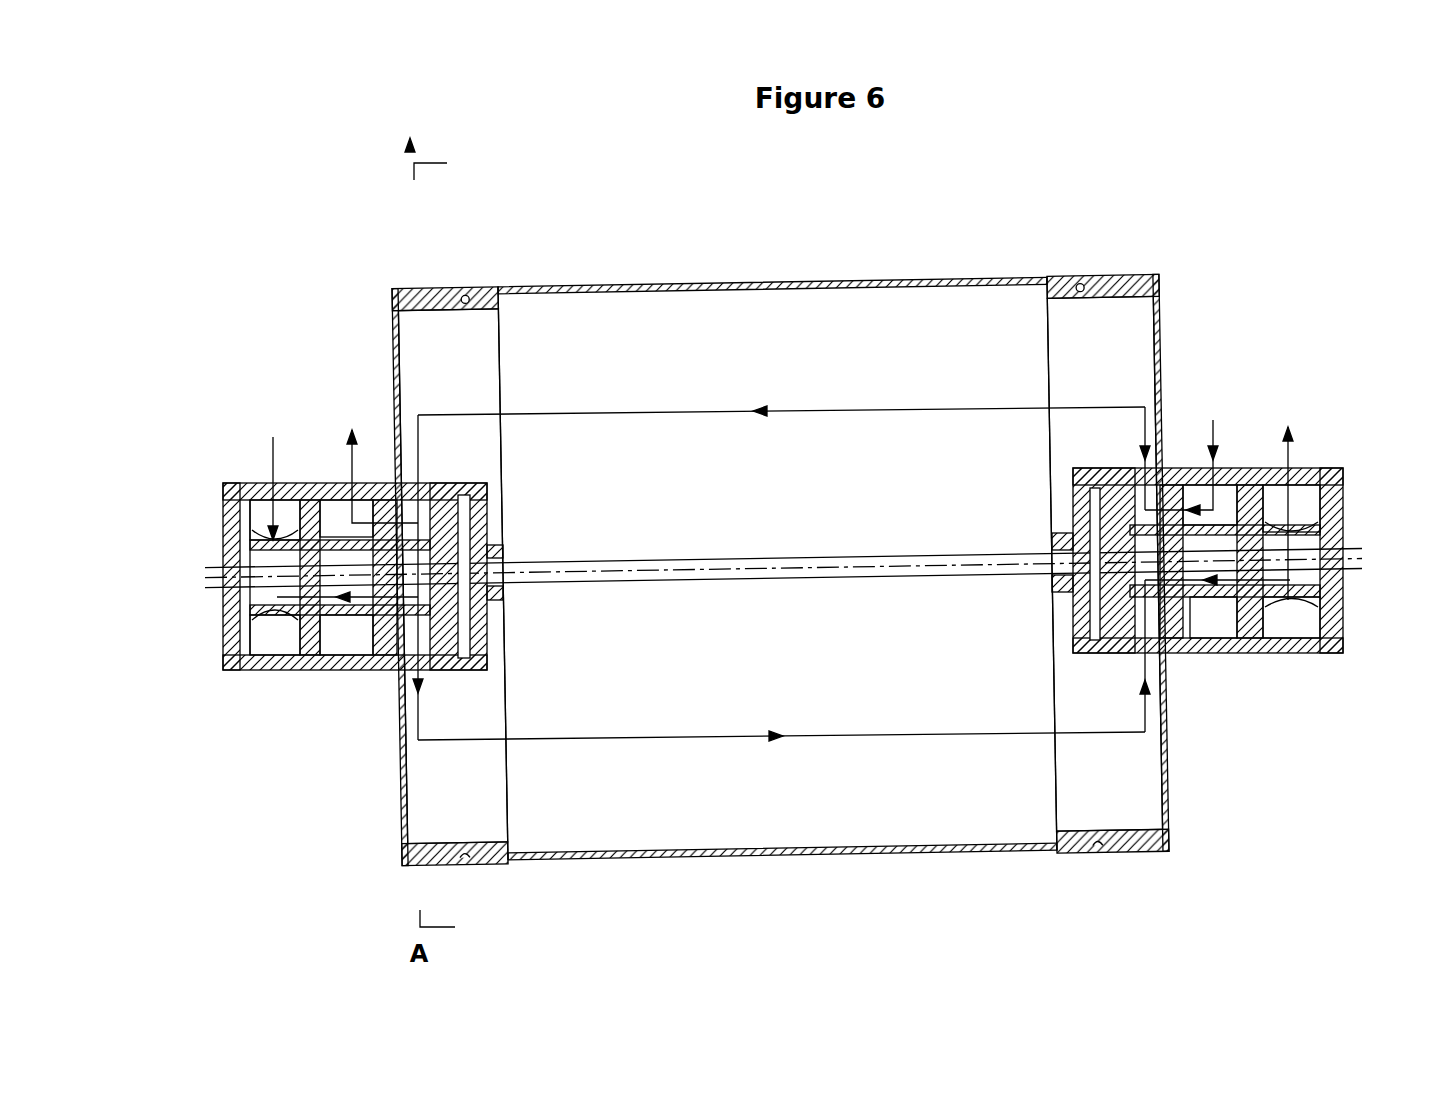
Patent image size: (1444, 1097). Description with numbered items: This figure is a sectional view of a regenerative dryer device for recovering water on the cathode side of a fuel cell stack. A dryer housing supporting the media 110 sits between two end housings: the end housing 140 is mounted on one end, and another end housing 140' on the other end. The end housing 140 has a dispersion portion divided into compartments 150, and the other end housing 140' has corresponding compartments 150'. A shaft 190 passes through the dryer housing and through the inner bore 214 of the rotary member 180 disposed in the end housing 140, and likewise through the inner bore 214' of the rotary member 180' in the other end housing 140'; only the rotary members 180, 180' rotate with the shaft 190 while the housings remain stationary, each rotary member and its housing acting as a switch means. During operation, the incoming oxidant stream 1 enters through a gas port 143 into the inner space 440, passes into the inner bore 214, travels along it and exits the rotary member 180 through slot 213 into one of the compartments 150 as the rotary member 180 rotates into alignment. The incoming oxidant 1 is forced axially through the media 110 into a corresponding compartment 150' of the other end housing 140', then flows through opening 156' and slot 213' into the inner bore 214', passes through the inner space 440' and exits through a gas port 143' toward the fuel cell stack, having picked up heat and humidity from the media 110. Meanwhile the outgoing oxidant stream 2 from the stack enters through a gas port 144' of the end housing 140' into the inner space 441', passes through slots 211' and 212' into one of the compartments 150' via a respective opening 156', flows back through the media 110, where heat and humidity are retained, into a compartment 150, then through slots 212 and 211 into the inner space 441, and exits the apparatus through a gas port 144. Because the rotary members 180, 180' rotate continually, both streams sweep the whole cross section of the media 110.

The media 110 is at (865, 345).
The end housing 140 is at (430, 534).
The end housing 140' is at (1130, 519).
The compartments 150 is at (499, 525).
The compartments 150' is at (1170, 521).
The opening 156' is at (1220, 392).
The shaft 190 is at (773, 560).
The gas port 143 is at (209, 547).
The gas port 143' is at (1346, 509).
The gas port 144 is at (348, 457).
The gas port 144' is at (1212, 448).
The inner space 440 is at (214, 488).
The inner space 440' is at (1351, 502).
The inner space 441 is at (351, 523).
The inner space 441' is at (1236, 469).
The slot 211 is at (348, 514).
The slot 211' is at (1117, 548).
The slot 212 is at (455, 547).
The slot 212' is at (1187, 487).
The slot 213 is at (350, 586).
The slot 213' is at (1215, 664).
The inner bore 214 is at (306, 599).
The inner bore 214' is at (1246, 527).
The rotary member 180 is at (279, 627).
The rotary member 180' is at (1277, 597).
The incoming oxidant stream 1 is at (890, 745).
The outgoing oxidant stream 2 is at (895, 412).